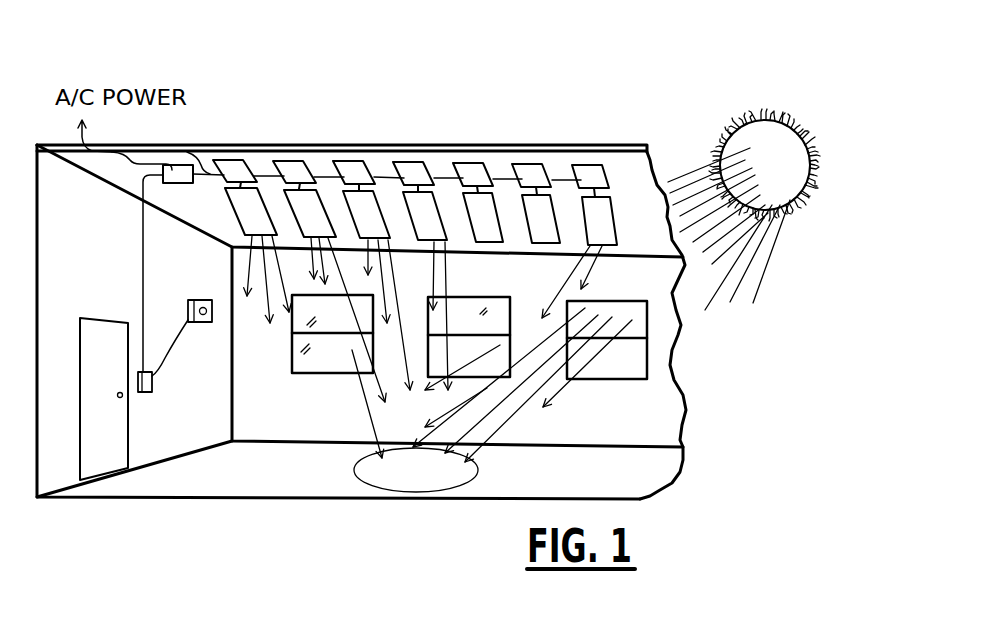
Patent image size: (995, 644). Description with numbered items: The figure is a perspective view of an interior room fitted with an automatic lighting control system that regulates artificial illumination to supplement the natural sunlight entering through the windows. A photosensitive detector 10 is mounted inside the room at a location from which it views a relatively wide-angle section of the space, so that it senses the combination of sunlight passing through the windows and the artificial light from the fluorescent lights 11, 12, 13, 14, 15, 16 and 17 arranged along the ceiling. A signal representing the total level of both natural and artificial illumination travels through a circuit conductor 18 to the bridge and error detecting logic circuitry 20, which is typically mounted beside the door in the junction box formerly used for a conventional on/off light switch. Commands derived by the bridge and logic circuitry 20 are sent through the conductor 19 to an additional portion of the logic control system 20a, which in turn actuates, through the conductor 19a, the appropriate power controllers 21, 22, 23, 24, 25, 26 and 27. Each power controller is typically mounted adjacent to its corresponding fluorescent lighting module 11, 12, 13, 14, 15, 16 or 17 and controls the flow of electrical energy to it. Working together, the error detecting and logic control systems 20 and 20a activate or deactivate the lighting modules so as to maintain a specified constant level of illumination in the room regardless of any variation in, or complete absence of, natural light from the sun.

The photosensitive detector 10 is at (205, 277).
The fluorescent light 11 is at (243, 229).
The fluorescent light 12 is at (301, 231).
The fluorescent light 13 is at (358, 232).
The fluorescent light 14 is at (416, 234).
The fluorescent light 15 is at (474, 235).
The fluorescent light 16 is at (532, 236).
The fluorescent lighting module 17 is at (590, 237).
The circuit conductor 18 is at (170, 351).
The conductor 19 is at (143, 268).
The conductor 19a is at (186, 152).
The bridge and error detecting logic circuitry 20 is at (152, 391).
The additional portion of the logic control system 20a is at (113, 152).
The power controller 21 is at (242, 166).
The power controller 22 is at (293, 167).
The power controller 23 is at (354, 168).
The power controller 24 is at (414, 169).
The power controller 25 is at (473, 170).
The power controller 26 is at (532, 171).
The power controller 27 is at (592, 172).